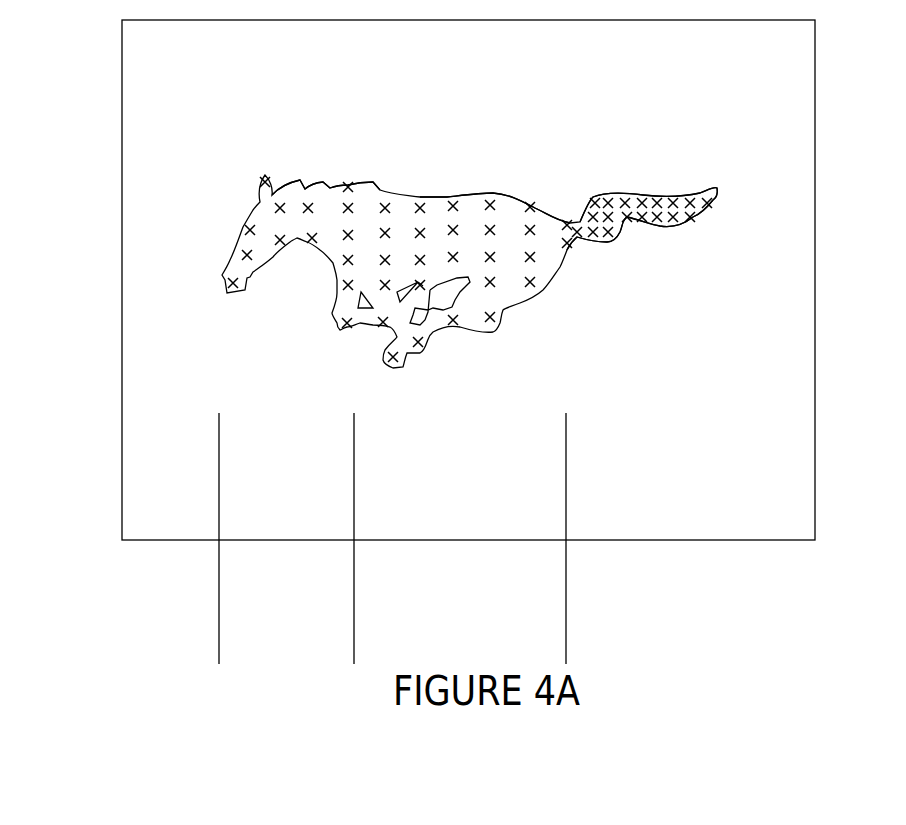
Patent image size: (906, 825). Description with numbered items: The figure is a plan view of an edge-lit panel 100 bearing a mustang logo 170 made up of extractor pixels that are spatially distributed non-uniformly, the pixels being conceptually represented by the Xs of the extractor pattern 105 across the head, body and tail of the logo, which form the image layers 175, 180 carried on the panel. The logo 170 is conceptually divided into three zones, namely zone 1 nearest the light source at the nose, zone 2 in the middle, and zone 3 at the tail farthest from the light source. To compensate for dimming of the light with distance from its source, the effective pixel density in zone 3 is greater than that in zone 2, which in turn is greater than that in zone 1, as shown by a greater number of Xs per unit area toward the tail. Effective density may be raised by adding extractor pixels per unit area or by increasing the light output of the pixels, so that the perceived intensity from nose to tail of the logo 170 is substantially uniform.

The panel 100 is at (168, 127).
The logo 170 is at (220, 277).
The extractor pattern 105 is at (368, 186).
The image layer 175 is at (492, 197).
The image layer 180 is at (618, 197).
The zone 1 is at (286, 538).
The zone 2 is at (530, 538).
The zone 3 is at (640, 589).